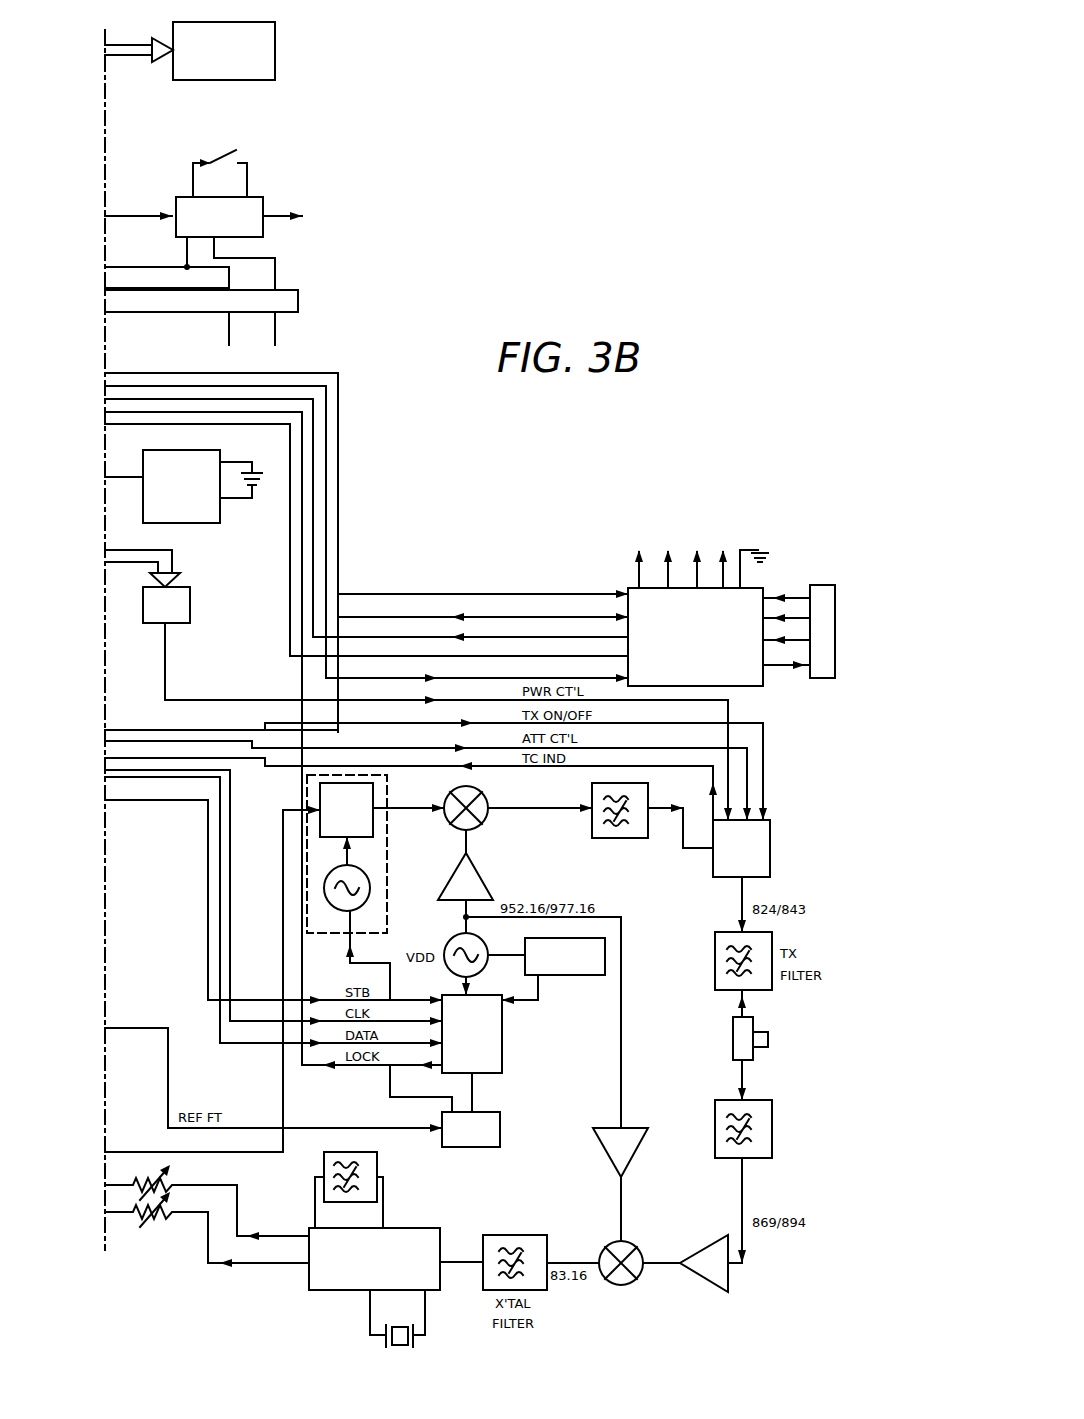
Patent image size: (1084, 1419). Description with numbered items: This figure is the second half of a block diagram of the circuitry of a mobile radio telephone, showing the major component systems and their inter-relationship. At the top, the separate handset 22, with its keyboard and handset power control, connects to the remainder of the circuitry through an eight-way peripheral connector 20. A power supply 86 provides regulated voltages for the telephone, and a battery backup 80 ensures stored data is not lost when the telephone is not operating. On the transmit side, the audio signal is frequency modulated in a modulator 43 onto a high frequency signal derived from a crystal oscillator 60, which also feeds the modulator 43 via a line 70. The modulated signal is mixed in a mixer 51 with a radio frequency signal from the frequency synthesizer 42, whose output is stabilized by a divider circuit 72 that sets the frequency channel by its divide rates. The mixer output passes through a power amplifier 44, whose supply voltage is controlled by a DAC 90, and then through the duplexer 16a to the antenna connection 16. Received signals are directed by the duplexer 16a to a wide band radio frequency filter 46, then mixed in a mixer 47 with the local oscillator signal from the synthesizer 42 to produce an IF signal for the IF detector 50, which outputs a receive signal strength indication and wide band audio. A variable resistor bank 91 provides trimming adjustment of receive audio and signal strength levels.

The handset 22 is at (380, 13).
The peripheral connector 20 is at (298, 304).
The battery backup 80 is at (208, 527).
The DAC 90 is at (190, 610).
The power supply 86 is at (710, 673).
The modulator 43 is at (364, 828).
The mixer 51 is at (486, 822).
The power amplifier 44 is at (767, 852).
The antenna connection 16 is at (768, 1035).
The duplexer 16a is at (756, 1052).
The wide band radio frequency filter 46 is at (772, 1100).
The mixer 47 is at (637, 1250).
The line 70 is at (349, 950).
The divider circuit 72 is at (553, 976).
The frequency synthesizer 42 is at (502, 1046).
The crystal oscillator 60 is at (500, 1113).
The IF detector 50 is at (437, 1228).
The variable resistor bank 91 is at (128, 1200).